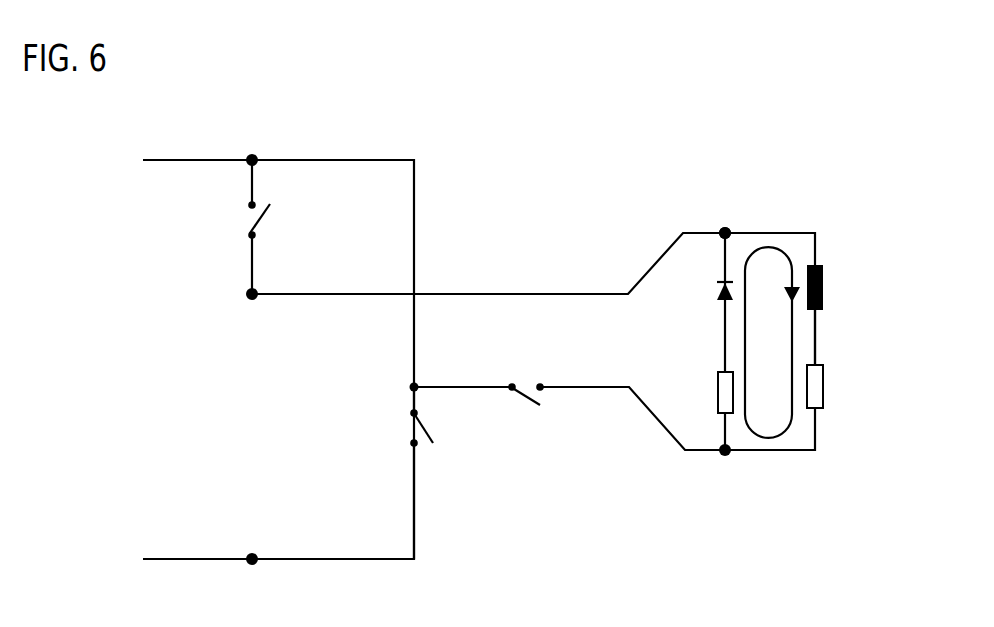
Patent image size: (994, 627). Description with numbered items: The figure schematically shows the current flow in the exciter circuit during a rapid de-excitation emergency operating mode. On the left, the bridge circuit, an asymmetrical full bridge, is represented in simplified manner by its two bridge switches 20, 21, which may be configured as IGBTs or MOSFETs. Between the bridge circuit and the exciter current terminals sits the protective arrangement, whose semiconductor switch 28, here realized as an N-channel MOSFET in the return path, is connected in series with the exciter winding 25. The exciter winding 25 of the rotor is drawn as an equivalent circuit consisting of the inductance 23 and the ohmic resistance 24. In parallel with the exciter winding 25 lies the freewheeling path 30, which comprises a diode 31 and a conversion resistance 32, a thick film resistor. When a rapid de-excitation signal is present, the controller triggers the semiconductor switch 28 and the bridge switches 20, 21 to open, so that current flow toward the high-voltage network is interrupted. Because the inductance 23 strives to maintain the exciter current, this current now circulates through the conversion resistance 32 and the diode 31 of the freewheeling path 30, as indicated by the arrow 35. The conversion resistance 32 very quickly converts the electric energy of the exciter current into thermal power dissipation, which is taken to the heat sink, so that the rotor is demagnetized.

The bridge switch 20 is at (241, 223).
The bridge switch 21 is at (435, 456).
The semiconductor switch 28 is at (533, 416).
The freewheeling path 30 is at (725, 268).
The diode 31 is at (703, 290).
The conversion resistance 32 is at (714, 385).
The arrow 35 is at (768, 439).
The inductance 23 is at (823, 288).
The exciter winding 25 is at (819, 331).
The ohmic resistance 24 is at (823, 385).